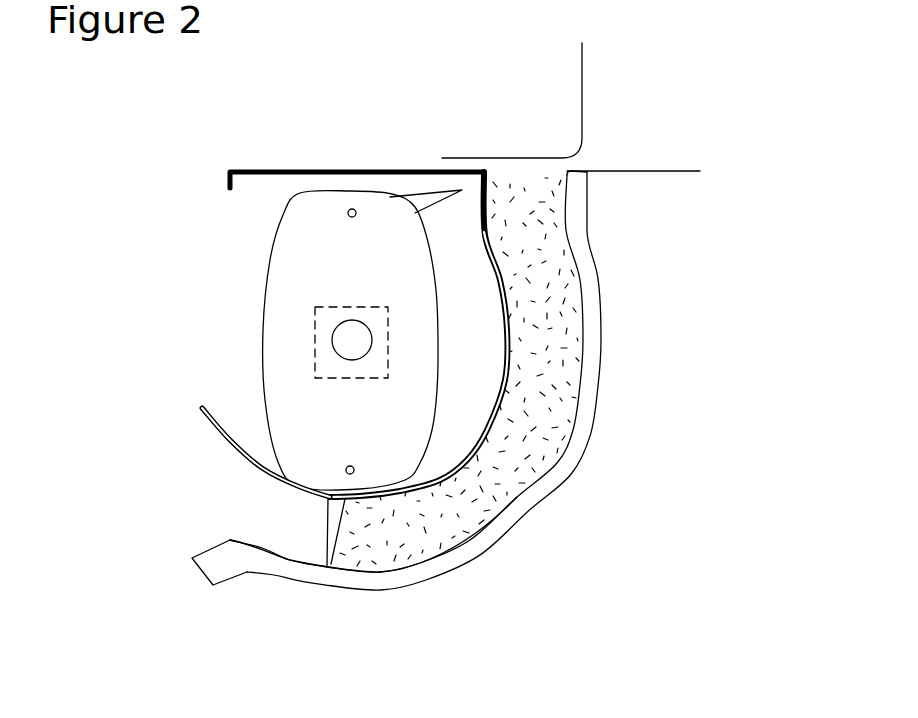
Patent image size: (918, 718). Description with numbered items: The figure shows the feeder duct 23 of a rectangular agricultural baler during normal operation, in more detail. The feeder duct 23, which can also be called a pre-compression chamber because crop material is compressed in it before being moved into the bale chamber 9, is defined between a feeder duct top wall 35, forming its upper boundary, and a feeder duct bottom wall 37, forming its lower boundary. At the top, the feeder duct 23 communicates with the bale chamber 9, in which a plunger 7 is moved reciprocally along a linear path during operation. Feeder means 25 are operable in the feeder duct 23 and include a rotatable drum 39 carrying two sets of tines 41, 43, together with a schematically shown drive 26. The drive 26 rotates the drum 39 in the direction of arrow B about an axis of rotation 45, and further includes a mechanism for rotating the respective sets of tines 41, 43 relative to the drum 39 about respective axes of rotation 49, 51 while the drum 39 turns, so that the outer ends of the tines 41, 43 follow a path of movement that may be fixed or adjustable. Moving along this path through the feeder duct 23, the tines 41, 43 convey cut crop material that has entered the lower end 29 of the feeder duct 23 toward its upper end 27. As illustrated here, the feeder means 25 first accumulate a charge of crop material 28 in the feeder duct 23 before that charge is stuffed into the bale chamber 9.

The plunger 7 is at (552, 108).
The bale chamber 9 is at (642, 130).
The feeder duct 23 is at (288, 545).
The feeder means 25 is at (243, 292).
The drive 26 is at (325, 372).
The upper end of the feeder duct 27 is at (552, 205).
The charge of crop material 28 is at (470, 497).
The lower end of the feeder duct 29 is at (197, 514).
The feeder duct top wall 35 is at (507, 327).
The feeder duct bottom wall 37 is at (568, 440).
The rotatable drum 39 is at (317, 220).
The set of tines 41 is at (325, 506).
The set of tines 43 is at (428, 205).
The axis of rotation 45 is at (343, 345).
The axis of rotation 49 is at (351, 465).
The axis of rotation 51 is at (350, 217).
The arrow B is at (322, 523).